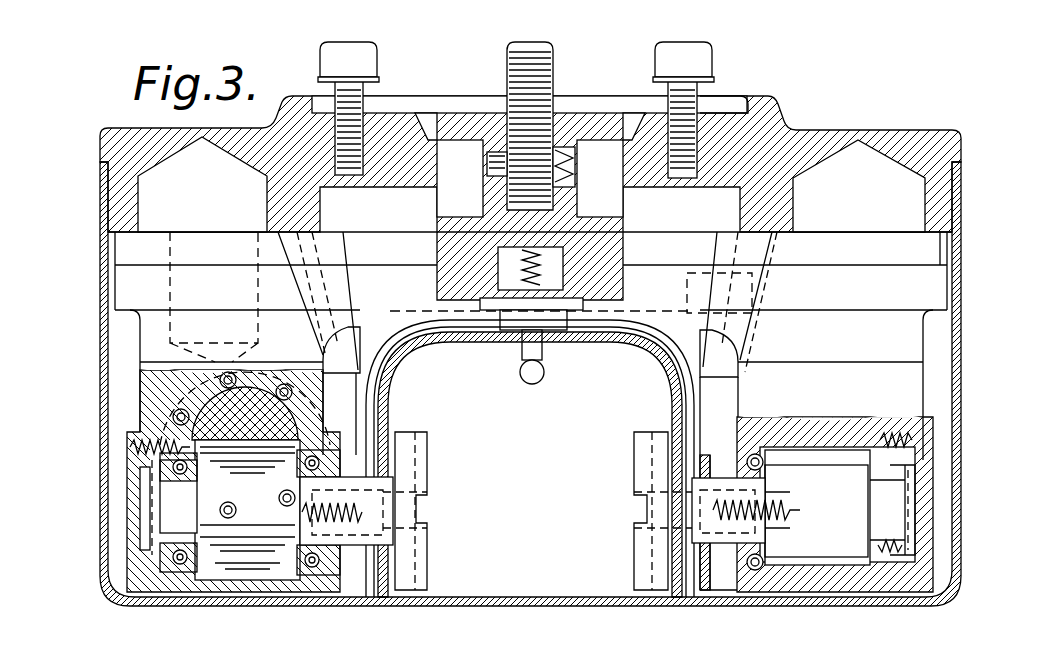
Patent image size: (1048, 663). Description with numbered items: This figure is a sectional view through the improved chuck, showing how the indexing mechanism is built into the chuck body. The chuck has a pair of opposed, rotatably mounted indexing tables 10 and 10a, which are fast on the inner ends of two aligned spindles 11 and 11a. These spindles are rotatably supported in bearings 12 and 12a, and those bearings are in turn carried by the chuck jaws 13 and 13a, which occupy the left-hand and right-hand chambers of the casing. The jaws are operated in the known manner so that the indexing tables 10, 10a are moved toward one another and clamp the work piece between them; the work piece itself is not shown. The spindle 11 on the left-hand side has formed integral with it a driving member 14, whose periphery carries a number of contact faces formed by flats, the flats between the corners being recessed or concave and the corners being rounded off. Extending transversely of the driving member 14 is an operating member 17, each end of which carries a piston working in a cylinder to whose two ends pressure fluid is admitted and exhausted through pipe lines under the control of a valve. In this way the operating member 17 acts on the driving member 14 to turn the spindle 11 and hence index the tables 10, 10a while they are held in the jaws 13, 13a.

The indexing table 10 is at (408, 436).
The indexing table 10a is at (660, 436).
The spindle 11 is at (374, 480).
The spindle 11a is at (688, 481).
The bearing 12 is at (185, 553).
The bearing 12a is at (880, 468).
The chuck jaw 13 is at (160, 325).
The chuck jaw 13a is at (892, 338).
The driving member 14 is at (210, 488).
The operating member 17 is at (264, 406).